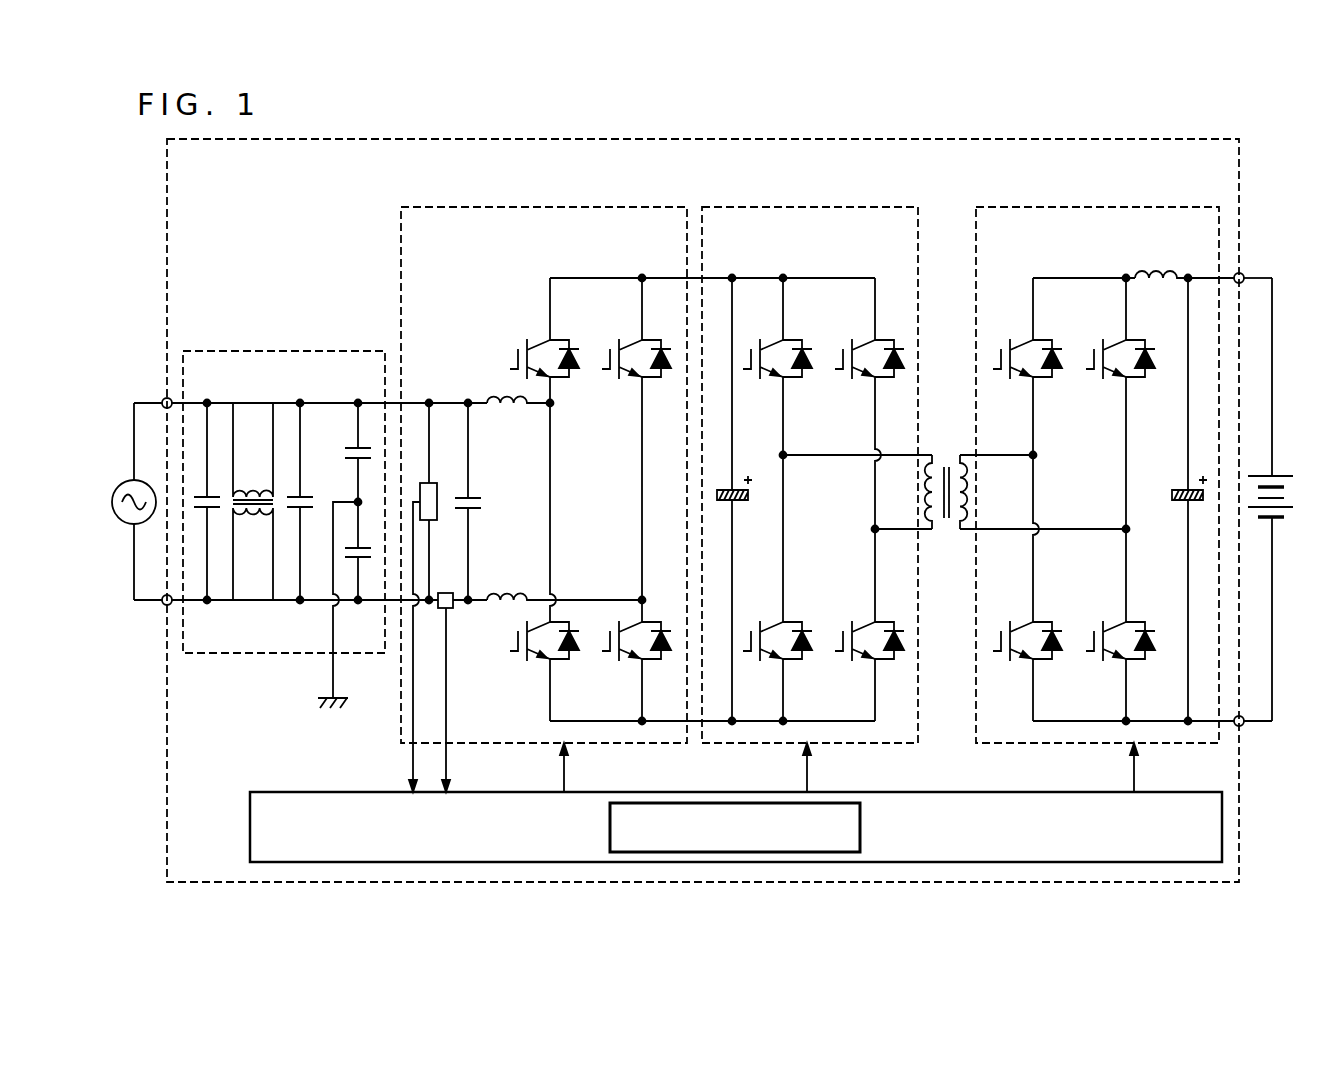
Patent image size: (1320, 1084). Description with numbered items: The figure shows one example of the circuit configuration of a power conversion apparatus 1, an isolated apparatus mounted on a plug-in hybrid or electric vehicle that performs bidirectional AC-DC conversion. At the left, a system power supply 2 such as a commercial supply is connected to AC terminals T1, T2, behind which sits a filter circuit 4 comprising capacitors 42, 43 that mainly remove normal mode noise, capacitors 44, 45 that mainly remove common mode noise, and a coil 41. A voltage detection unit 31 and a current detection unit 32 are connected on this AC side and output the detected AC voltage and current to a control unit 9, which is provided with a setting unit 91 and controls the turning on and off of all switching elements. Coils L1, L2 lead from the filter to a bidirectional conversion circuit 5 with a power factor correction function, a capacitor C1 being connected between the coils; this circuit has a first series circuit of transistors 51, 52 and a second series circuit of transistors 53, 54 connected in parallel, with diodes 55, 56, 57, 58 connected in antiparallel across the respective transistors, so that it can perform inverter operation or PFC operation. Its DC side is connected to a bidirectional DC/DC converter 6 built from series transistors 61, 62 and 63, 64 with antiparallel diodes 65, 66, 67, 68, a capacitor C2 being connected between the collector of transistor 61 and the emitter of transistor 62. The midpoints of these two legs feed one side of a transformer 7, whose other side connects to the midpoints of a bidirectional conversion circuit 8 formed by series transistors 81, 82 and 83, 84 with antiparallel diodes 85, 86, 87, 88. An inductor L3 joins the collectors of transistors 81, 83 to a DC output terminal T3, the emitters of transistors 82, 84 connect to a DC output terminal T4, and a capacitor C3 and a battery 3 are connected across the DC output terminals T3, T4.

The power conversion apparatus 1 is at (503, 139).
The system power supply 2 is at (123, 528).
The battery 3 is at (1265, 523).
The filter circuit 4 is at (280, 351).
The bidirectional conversion circuit 5 is at (535, 207).
The bidirectional DC/DC converter 6 is at (817, 207).
The transformer 7 is at (948, 445).
The bidirectional conversion circuit 8 is at (1088, 207).
The control unit 9 is at (290, 792).
The setting unit 91 is at (737, 852).
The voltage detection unit 31 is at (439, 483).
The current detection unit 32 is at (455, 609).
The coil 41 is at (247, 487).
The capacitor 42 is at (213, 449).
The capacitor 43 is at (305, 495).
The capacitor 44 is at (347, 440).
The capacitor 45 is at (368, 567).
The transistor 51 is at (520, 338).
The transistor 52 is at (533, 663).
The transistor 53 is at (613, 338).
The transistor 54 is at (626, 663).
The diode 55 is at (564, 340).
The diode 56 is at (572, 663).
The diode 57 is at (659, 340).
The diode 58 is at (665, 663).
The transistor 61 is at (754, 338).
The transistor 62 is at (766, 663).
The transistor 63 is at (846, 338).
The transistor 64 is at (858, 663).
The diode 65 is at (799, 340).
The diode 66 is at (805, 663).
The diode 67 is at (894, 340).
The diode 68 is at (898, 663).
The transistor 81 is at (1003, 338).
The transistor 82 is at (1016, 663).
The transistor 83 is at (1096, 338).
The transistor 84 is at (1109, 663).
The diode 85 is at (1049, 340).
The diode 86 is at (1055, 663).
The diode 87 is at (1143, 340).
The diode 88 is at (1149, 663).
The coil L1 is at (505, 409).
The coil L2 is at (507, 590).
The inductor L3 is at (1162, 270).
The capacitor C1 is at (484, 500).
The capacitor C2 is at (739, 483).
The capacitor C3 is at (1177, 487).
The AC terminal T1 is at (165, 397).
The AC terminal T2 is at (165, 606).
The DC output terminal T3 is at (1242, 272).
The DC output terminal T4 is at (1241, 728).